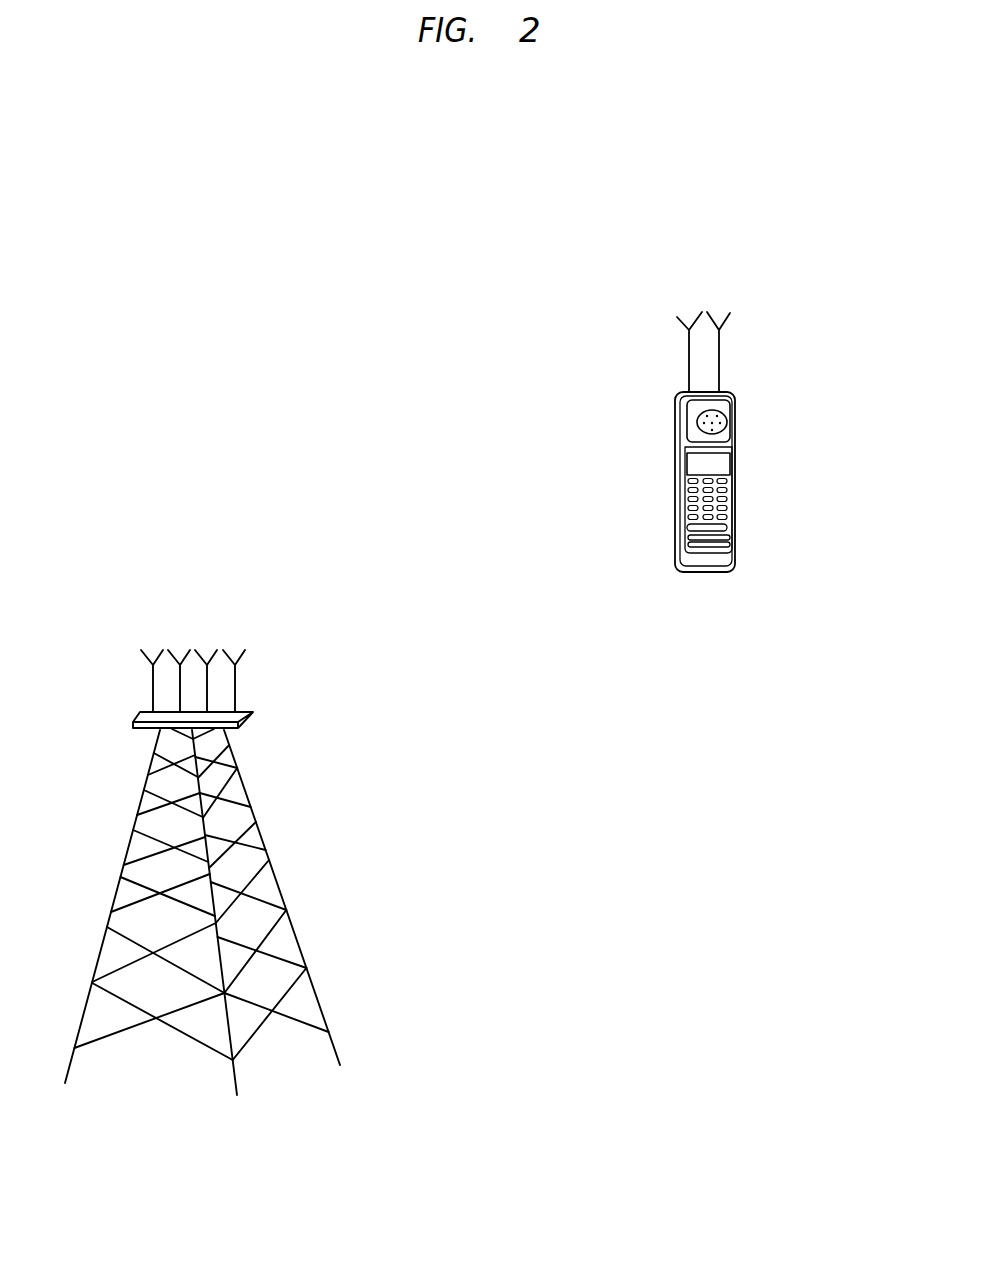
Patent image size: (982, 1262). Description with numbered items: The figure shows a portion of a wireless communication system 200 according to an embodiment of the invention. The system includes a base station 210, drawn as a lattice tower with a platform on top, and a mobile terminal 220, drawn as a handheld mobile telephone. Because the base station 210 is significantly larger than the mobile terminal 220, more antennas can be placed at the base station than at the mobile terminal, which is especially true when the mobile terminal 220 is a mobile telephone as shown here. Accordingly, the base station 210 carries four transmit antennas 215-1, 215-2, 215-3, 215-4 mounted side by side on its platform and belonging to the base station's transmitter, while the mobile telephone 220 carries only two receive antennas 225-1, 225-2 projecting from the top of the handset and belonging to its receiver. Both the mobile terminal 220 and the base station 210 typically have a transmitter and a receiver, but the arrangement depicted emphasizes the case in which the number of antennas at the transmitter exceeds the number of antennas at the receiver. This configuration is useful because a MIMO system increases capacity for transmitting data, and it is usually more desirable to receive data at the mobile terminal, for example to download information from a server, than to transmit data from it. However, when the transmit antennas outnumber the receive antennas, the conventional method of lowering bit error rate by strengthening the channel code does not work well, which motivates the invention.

The wireless communication system 200 is at (457, 205).
The base station 210 is at (287, 904).
The transmit antenna 215-1 is at (142, 664).
The transmit antenna 215-2 is at (187, 650).
The transmit antenna 215-3 is at (202, 650).
The transmit antenna 215-4 is at (240, 665).
The mobile terminal 220 is at (735, 530).
The receive antenna 225-1 is at (677, 317).
The receive antenna 225-2 is at (730, 313).